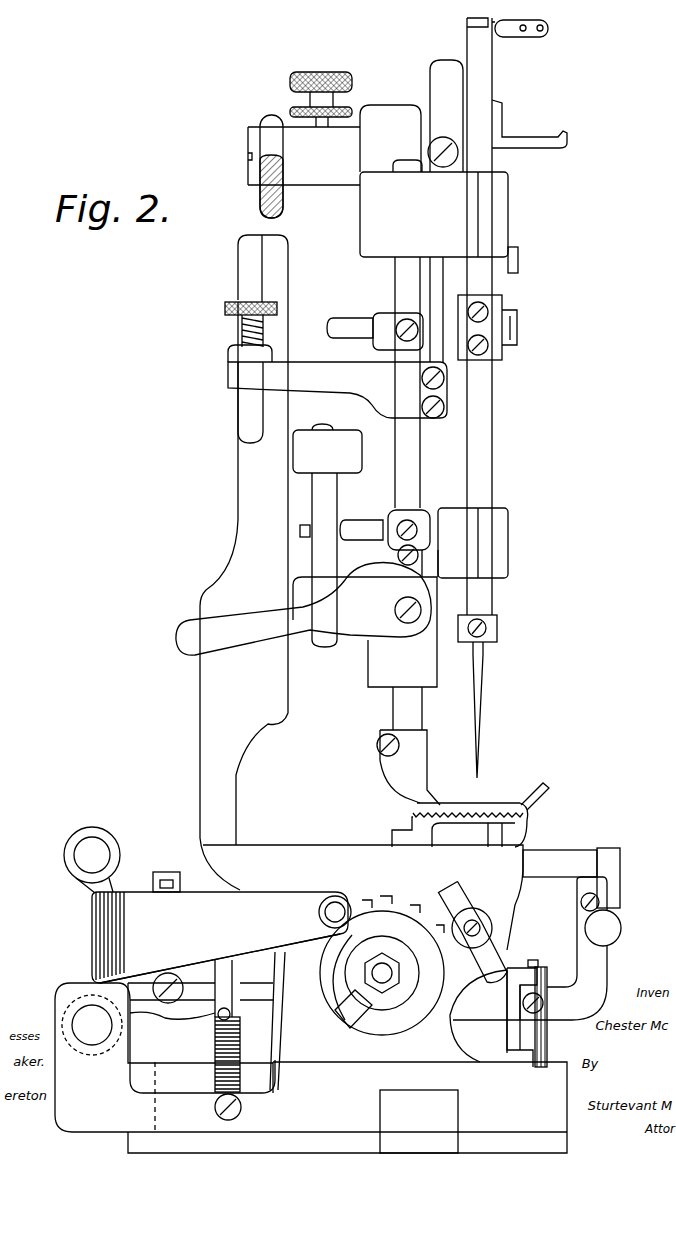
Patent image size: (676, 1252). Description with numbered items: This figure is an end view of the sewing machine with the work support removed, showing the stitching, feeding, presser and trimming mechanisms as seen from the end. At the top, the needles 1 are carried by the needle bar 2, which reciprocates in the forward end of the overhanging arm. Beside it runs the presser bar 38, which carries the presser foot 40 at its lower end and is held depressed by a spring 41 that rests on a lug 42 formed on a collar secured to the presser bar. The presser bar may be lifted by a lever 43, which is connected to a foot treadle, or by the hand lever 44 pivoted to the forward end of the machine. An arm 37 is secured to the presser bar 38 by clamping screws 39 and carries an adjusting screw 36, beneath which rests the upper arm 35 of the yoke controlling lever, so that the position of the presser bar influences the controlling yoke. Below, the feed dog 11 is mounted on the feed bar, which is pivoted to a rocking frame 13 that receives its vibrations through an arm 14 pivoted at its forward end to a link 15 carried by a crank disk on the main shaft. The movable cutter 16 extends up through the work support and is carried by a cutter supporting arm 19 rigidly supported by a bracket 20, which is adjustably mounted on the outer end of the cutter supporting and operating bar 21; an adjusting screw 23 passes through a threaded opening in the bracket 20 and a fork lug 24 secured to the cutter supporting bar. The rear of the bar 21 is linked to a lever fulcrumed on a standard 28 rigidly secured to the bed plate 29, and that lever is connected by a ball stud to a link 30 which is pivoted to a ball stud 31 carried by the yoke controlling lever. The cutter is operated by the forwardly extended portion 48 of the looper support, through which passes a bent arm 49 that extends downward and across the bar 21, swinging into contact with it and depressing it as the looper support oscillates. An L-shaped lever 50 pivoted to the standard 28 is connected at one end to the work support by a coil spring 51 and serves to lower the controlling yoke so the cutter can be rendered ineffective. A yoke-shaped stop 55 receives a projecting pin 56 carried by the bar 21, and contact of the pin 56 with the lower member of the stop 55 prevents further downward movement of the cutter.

The needles 1 is at (484, 695).
The needle bar 2 is at (490, 440).
The feed dog 11 is at (527, 822).
The rocking frame 13 is at (90, 936).
The arm 14 is at (220, 950).
The link 15 is at (328, 924).
The movable cutter 16 is at (490, 826).
The cutter supporting arm 19 is at (569, 864).
The bracket 20 is at (620, 868).
The cutter supporting and operating bar 21 is at (608, 967).
The adjusting screw 23 is at (622, 928).
The fork lug 24 is at (610, 905).
The standard 28 is at (243, 1049).
The bed plate 29 is at (302, 1085).
The link 30 is at (185, 1008).
The ball stud 31 is at (168, 1003).
The upper arm 35 is at (236, 425).
The adjusting screw 36 is at (240, 333).
The arm 37 is at (337, 390).
The presser bar 38 is at (420, 467).
The clamping screws 39 is at (447, 382).
The presser foot 40 is at (497, 803).
The spring 41 is at (352, 317).
The lug 42 is at (352, 330).
The lever 43 is at (261, 199).
The hand lever 44 is at (303, 609).
The forwardly extended portion 48 is at (478, 922).
The bent arm 49 is at (507, 960).
The L-shaped lever 50 is at (214, 965).
The coil spring 51 is at (215, 1070).
The stop 55 is at (548, 1042).
The projecting pin 56 is at (543, 1000).